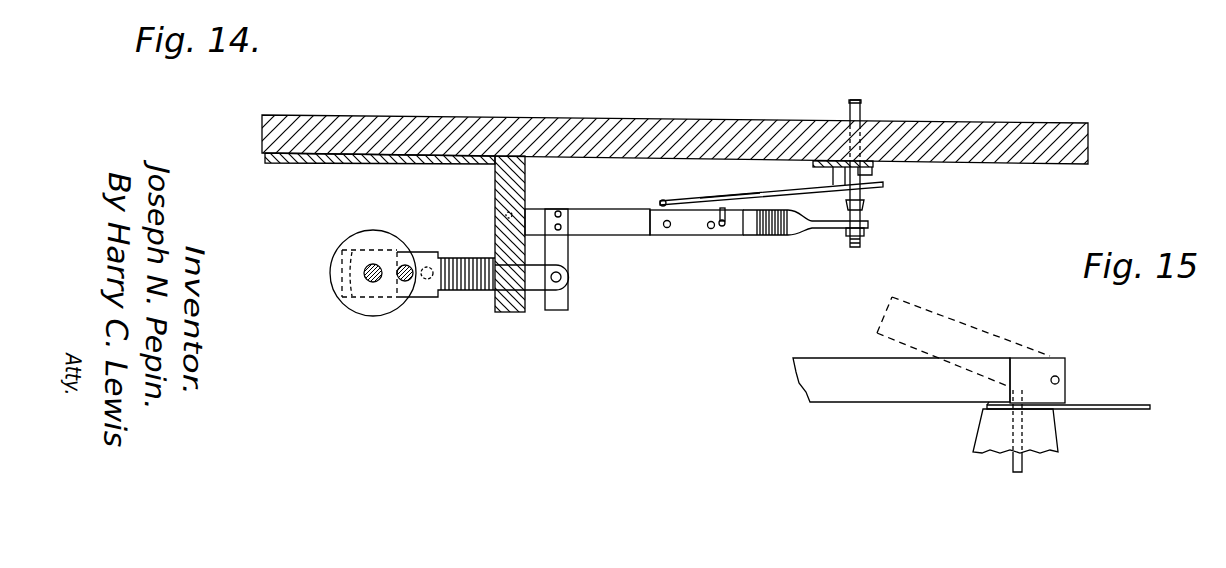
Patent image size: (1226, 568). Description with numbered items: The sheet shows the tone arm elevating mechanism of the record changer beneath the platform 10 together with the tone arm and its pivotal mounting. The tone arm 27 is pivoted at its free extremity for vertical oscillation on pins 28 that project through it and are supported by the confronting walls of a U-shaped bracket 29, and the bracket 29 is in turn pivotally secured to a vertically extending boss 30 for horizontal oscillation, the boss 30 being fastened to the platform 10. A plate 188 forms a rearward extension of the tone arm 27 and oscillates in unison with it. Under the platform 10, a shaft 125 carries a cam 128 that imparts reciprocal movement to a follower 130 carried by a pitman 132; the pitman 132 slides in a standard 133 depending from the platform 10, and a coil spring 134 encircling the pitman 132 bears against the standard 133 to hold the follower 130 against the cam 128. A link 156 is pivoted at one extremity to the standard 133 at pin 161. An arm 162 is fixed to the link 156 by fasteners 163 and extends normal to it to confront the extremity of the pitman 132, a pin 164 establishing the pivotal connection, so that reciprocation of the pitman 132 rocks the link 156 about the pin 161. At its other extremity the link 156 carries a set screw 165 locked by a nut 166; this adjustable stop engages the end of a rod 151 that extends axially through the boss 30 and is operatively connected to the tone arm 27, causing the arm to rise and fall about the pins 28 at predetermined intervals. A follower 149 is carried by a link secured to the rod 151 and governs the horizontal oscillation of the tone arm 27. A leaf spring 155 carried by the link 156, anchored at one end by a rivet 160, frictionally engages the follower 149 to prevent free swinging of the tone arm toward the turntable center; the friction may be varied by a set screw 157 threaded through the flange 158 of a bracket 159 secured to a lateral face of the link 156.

In FIG. 14, the platform 10 is at (684, 133).
In FIG. 15, the tone arm 27 is at (883, 388).
In FIG. 15, the pins 28 is at (1060, 380).
In FIG. 15, the U-shaped bracket 29 is at (1020, 370).
In FIG. 15, the boss 30 is at (987, 406).
In FIG. 14, the shaft 125 is at (375, 283).
In FIG. 14, the cam 128 is at (378, 243).
In FIG. 14, the follower 130 is at (406, 266).
In FIG. 14, the pitman 132 is at (523, 278).
In FIG. 14, the standard 133 is at (527, 162).
In FIG. 14, the coil spring 134 is at (477, 292).
In FIG. 14, the follower 149 is at (840, 92).
In FIG. 14, the rod 151 is at (858, 118).
In FIG. 15, the rod 151 is at (1023, 463).
In FIG. 14, the leaf spring 155 is at (788, 196).
In FIG. 14, the link 156 is at (616, 222).
In FIG. 14, the set screw 157 is at (737, 206).
In FIG. 14, the flange 158 is at (738, 213).
In FIG. 14, the bracket 159 is at (683, 229).
In FIG. 14, the rivet 160 is at (680, 196).
In FIG. 14, the pin 161 is at (507, 214).
In FIG. 14, the arm 162 is at (548, 246).
In FIG. 14, the fasteners 163 is at (561, 211).
In FIG. 14, the pin 164 is at (562, 282).
In FIG. 14, the set screw 165 is at (863, 205).
In FIG. 14, the nut 166 is at (863, 234).
In FIG. 15, the plate 188 is at (1160, 387).